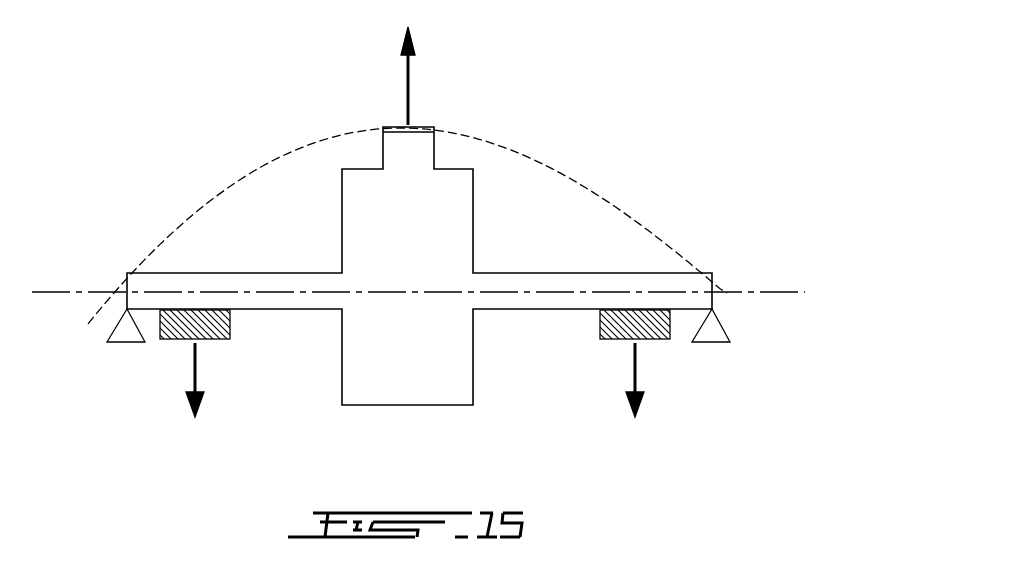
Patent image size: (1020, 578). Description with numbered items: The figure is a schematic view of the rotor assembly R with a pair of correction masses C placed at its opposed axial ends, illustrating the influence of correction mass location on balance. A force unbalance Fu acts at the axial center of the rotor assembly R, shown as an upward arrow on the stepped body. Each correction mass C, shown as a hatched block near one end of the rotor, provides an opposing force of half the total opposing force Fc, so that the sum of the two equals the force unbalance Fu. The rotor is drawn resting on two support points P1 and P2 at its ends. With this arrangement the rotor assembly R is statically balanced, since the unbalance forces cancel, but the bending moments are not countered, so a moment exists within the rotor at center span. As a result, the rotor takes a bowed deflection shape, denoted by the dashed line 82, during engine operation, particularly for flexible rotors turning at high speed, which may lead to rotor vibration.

The rotor assembly R is at (356, 178).
The bowed rotor deflection shape line 82 is at (627, 211).
The first support point P1 is at (127, 310).
The second support point P2 is at (712, 309).
The correction mass C is at (177, 331).
The force unbalance Fu is at (431, 74).
The opposing force Fc is at (215, 460).